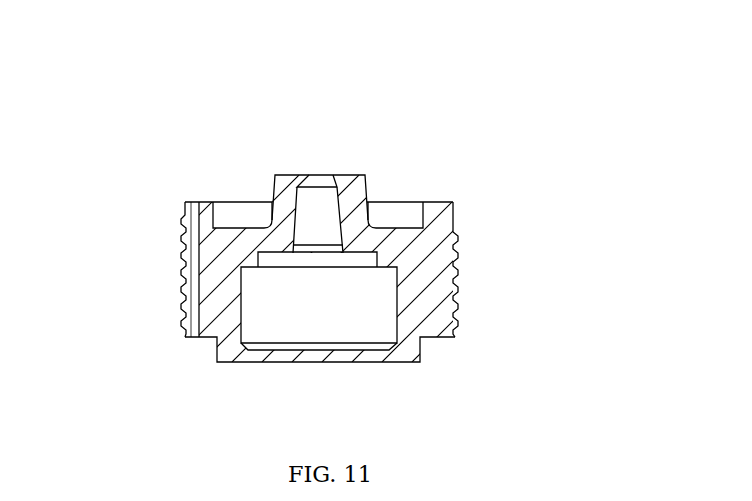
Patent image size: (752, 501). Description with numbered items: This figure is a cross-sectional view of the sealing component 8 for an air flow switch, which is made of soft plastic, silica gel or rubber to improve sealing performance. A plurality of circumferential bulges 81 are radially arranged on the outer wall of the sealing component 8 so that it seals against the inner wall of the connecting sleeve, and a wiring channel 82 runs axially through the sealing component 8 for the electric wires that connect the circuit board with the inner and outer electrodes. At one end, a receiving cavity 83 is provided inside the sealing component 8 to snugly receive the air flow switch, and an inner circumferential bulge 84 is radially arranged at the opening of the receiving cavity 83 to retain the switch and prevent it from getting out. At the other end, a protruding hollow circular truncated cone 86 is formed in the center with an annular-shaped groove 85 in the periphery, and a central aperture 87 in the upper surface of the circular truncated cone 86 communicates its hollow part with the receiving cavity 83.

The sealing component for the air flow switch 8 is at (430, 268).
The circumferential bulges 81 is at (458, 318).
The wiring channel 82 is at (193, 248).
The receiving cavity 83 is at (285, 302).
The inner circumferential bulge 84 is at (383, 352).
The annular-shaped groove 85 is at (250, 222).
The hollow circular truncated cone 86 is at (363, 175).
The central aperture 87 is at (318, 176).